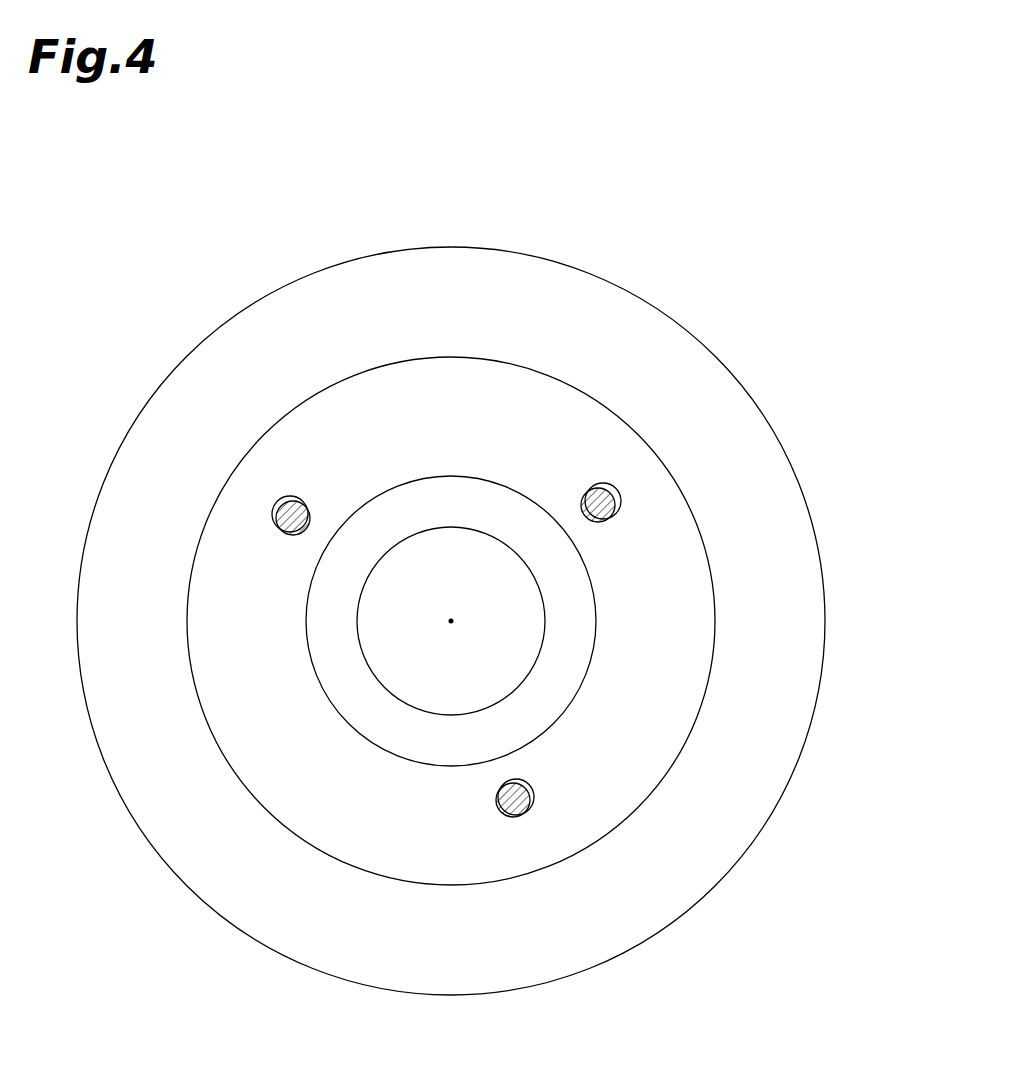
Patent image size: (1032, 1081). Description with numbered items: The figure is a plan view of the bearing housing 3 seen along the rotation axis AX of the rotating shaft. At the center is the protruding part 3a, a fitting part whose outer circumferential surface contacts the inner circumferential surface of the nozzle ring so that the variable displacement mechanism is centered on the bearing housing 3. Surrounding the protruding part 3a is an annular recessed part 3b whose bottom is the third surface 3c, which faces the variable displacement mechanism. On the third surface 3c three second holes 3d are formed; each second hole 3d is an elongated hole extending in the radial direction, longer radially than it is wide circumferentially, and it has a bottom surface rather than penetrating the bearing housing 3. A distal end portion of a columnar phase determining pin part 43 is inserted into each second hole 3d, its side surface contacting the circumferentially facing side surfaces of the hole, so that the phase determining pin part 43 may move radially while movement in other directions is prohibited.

The bearing housing 3 is at (545, 258).
The protruding part 3a is at (596, 585).
The annular recessed part 3b is at (710, 604).
The third surface 3c is at (658, 678).
The second hole 3d is at (268, 520).
The phase determining pin part 43 is at (275, 503).
The rotation axis AX is at (453, 623).